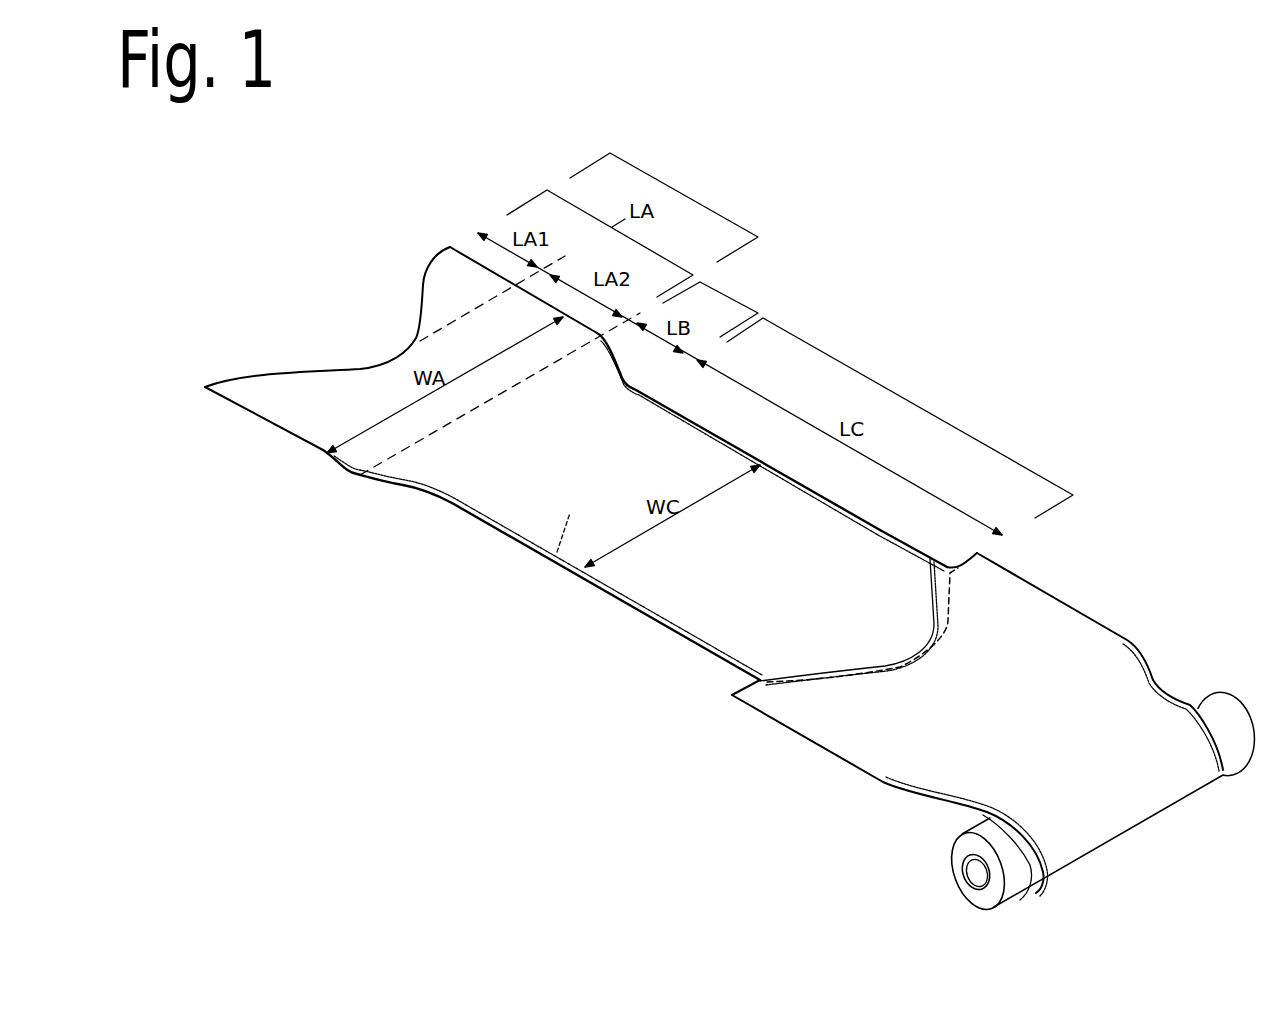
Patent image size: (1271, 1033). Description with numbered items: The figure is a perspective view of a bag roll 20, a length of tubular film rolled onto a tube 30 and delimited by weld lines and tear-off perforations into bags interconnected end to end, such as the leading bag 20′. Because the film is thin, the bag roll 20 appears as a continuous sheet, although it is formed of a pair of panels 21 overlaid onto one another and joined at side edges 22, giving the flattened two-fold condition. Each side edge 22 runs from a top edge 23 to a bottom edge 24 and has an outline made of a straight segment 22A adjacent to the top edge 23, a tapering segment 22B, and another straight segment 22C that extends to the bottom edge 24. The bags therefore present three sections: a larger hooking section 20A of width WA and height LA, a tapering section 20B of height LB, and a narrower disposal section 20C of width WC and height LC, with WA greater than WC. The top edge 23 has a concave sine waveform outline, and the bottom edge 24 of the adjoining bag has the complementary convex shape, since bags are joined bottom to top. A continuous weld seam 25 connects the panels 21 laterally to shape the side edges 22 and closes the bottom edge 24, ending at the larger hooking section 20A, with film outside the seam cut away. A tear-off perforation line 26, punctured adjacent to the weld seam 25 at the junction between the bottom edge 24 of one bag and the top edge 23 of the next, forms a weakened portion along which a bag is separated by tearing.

The bag roll 20 is at (893, 283).
The larger hooking section 20A is at (670, 186).
The tapering section 20B is at (727, 295).
The narrower disposal section 20C is at (902, 398).
The leading bag 20′ is at (578, 630).
The panels 21 is at (637, 472).
The side edges 22 is at (745, 428).
The straight segment 22A is at (275, 430).
The tapering segment 22B is at (400, 490).
The straight segment 22C is at (680, 635).
The top edge 23 is at (357, 367).
The bottom edge 24 is at (930, 559).
The weld seam 25 is at (887, 533).
The tear-off perforation line 26 is at (950, 610).
The tube 30 is at (973, 872).